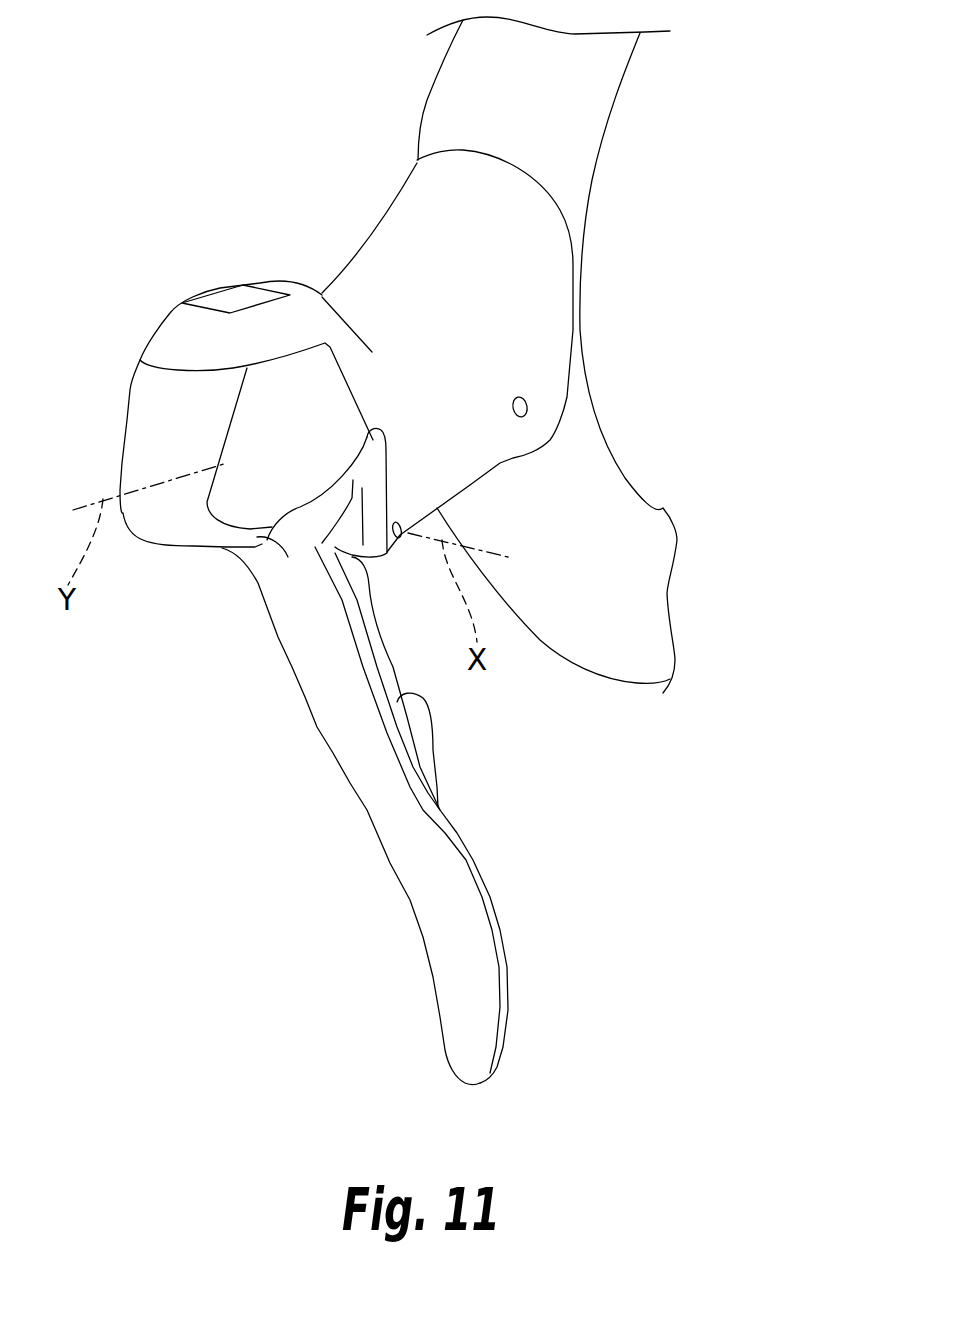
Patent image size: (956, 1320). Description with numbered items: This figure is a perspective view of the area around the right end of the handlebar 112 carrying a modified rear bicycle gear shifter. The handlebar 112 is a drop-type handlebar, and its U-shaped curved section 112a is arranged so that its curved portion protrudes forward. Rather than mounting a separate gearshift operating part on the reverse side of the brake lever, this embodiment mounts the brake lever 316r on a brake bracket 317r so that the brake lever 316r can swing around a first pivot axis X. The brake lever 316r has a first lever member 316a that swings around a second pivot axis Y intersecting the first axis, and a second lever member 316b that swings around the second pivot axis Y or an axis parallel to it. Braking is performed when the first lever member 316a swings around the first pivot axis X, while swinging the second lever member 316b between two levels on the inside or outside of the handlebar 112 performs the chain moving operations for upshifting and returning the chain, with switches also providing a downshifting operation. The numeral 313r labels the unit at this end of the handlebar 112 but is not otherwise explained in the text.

The handlebar 112 is at (630, 87).
The curved section 112a is at (555, 127).
The right connecting portion 313r is at (263, 152).
The brake bracket 317r is at (387, 265).
The brake lever 316r is at (401, 816).
The first lever member 316a is at (424, 910).
The second lever member 316b is at (394, 822).